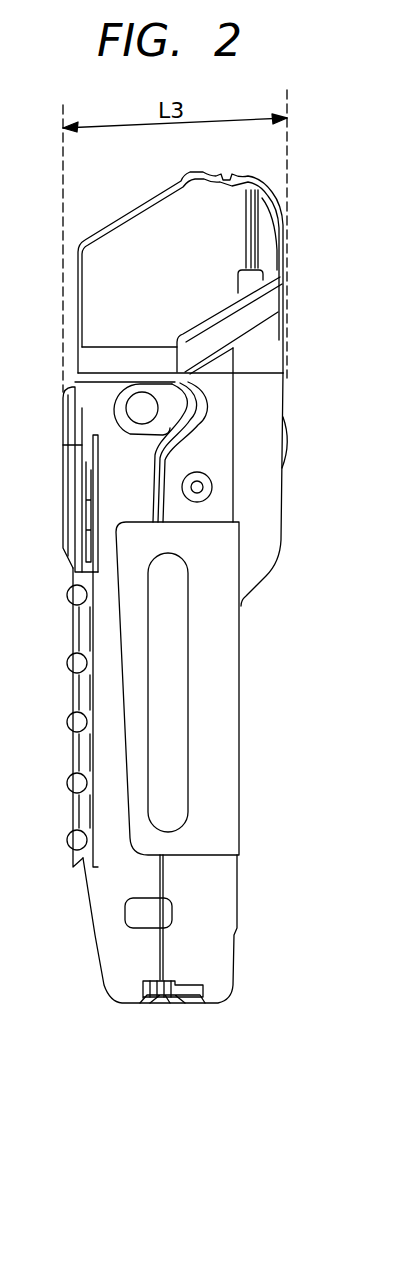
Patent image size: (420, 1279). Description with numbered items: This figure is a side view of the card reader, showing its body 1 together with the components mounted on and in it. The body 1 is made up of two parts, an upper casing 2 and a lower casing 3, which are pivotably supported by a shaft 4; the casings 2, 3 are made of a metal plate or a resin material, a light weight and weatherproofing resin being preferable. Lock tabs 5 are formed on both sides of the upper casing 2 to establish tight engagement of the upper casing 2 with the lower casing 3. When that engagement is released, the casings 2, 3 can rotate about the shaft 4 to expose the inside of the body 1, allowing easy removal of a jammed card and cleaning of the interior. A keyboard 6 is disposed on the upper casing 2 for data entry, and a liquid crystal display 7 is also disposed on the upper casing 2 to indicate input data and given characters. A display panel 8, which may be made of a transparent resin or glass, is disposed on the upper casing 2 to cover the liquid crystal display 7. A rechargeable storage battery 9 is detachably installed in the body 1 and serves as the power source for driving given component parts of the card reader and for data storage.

The body 1 is at (93, 1003).
The upper casing 2 is at (93, 920).
The lower casing 3 is at (232, 928).
The shaft 4 is at (133, 408).
The lock tabs 5 is at (165, 920).
The keyboard 6 is at (73, 780).
The liquid crystal display 7 is at (97, 508).
The display panel 8 is at (75, 486).
The rechargeable storage battery 9 is at (90, 268).